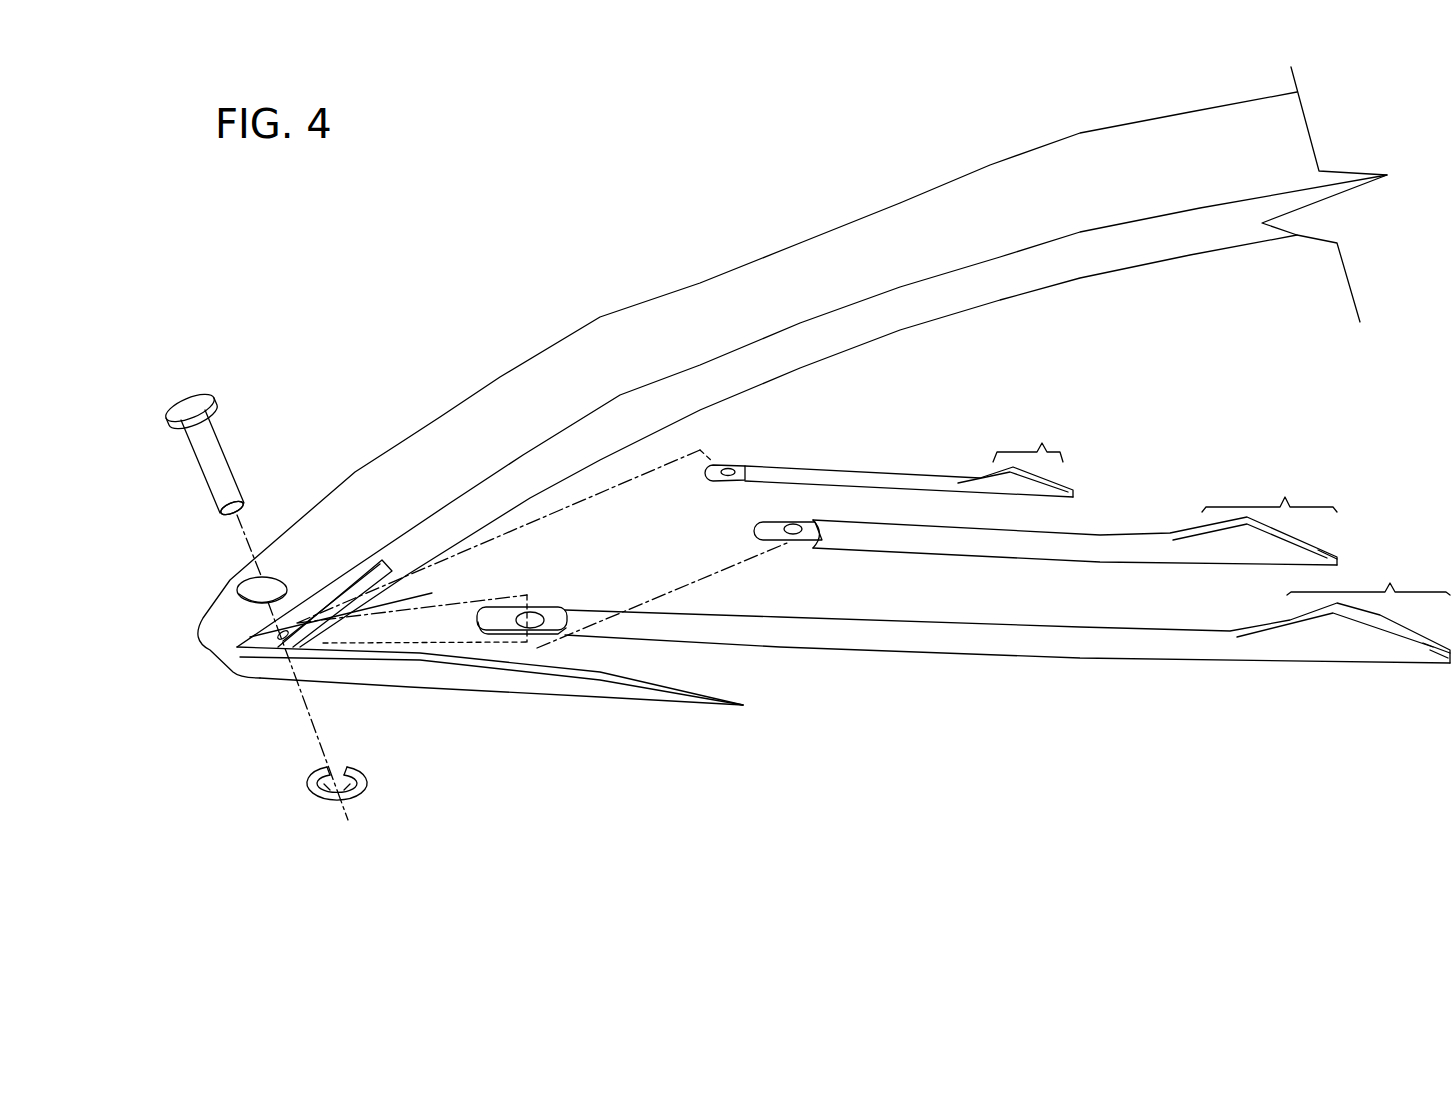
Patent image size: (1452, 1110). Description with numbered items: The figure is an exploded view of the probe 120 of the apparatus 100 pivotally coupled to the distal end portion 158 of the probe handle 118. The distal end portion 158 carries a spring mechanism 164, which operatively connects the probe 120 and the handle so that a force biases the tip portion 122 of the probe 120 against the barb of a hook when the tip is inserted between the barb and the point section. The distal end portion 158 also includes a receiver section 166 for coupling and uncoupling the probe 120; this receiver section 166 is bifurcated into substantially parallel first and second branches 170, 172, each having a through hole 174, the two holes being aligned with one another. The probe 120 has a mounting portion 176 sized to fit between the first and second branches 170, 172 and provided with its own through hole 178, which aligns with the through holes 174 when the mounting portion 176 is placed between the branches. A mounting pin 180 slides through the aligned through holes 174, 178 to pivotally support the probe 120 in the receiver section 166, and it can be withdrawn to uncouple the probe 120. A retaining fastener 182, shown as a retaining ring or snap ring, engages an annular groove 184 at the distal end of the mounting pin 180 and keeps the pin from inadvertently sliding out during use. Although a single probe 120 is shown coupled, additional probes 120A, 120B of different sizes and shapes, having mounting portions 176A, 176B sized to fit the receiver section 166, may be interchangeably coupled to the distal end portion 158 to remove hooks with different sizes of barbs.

The apparatus 100 is at (710, 182).
The probe handle 118 is at (934, 155).
The probe 120 is at (1113, 670).
The probe 120A is at (1112, 515).
The probe 120B is at (960, 462).
The tip portion 122 is at (1221, 508).
The distal end portion 158 is at (597, 313).
The spring mechanism 164 is at (440, 677).
The receiver section 166 is at (310, 305).
The first branch 170 is at (343, 572).
The second branch 172 is at (432, 593).
The through hole 174 is at (245, 597).
The mounting portion 176 is at (563, 586).
The mounting portion 176A is at (795, 526).
The mounting portion 176B is at (730, 468).
The through hole 178 is at (532, 614).
The mounting pin 180 is at (217, 463).
The retaining fastener 182 is at (313, 797).
The annular groove 184 is at (234, 506).